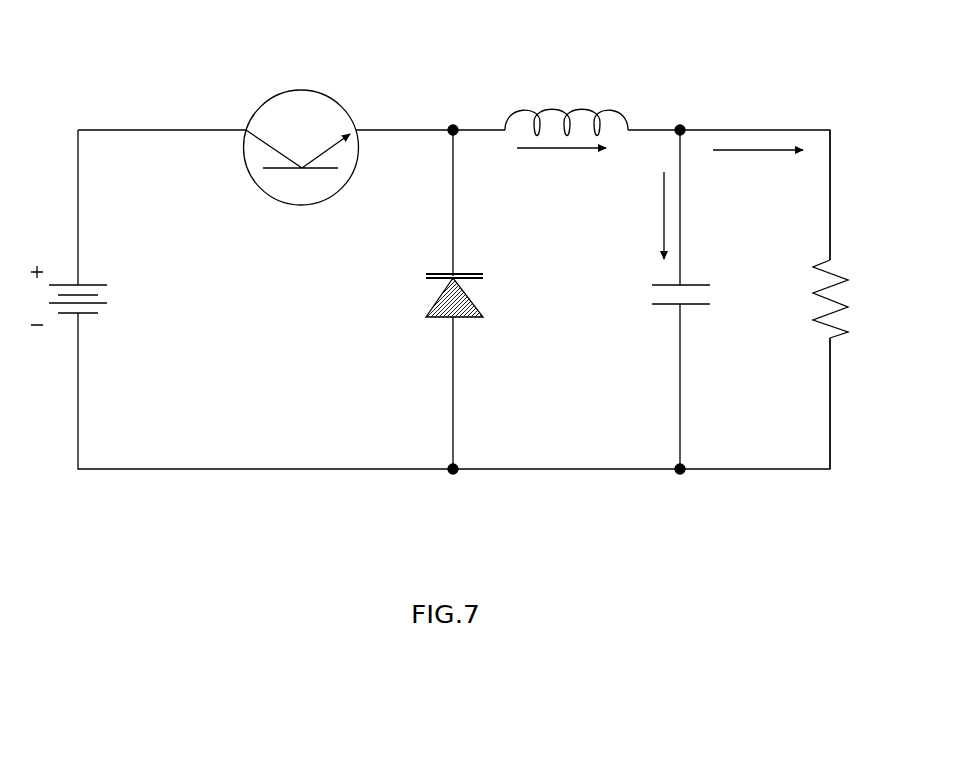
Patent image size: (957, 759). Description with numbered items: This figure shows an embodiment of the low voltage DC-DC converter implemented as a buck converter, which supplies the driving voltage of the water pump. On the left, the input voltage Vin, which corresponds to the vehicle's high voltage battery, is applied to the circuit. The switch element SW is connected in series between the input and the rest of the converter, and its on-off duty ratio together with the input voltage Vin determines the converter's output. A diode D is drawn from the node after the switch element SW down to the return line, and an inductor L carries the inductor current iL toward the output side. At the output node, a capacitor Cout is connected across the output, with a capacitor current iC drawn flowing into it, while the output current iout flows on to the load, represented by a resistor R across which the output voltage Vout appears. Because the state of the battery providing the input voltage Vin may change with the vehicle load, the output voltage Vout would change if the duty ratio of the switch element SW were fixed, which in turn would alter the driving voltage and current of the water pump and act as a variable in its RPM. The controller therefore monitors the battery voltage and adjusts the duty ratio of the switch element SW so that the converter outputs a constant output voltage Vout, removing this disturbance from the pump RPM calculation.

The switch element SW is at (325, 92).
The input voltage Vin is at (88, 295).
The diode D is at (462, 299).
The inductor L is at (566, 109).
The inductor current iL is at (561, 168).
The output capacitor Cout is at (658, 299).
The capacitor current iC is at (651, 215).
The output current iout is at (758, 167).
The load resistor R is at (818, 299).
The output voltage Vout is at (862, 299).